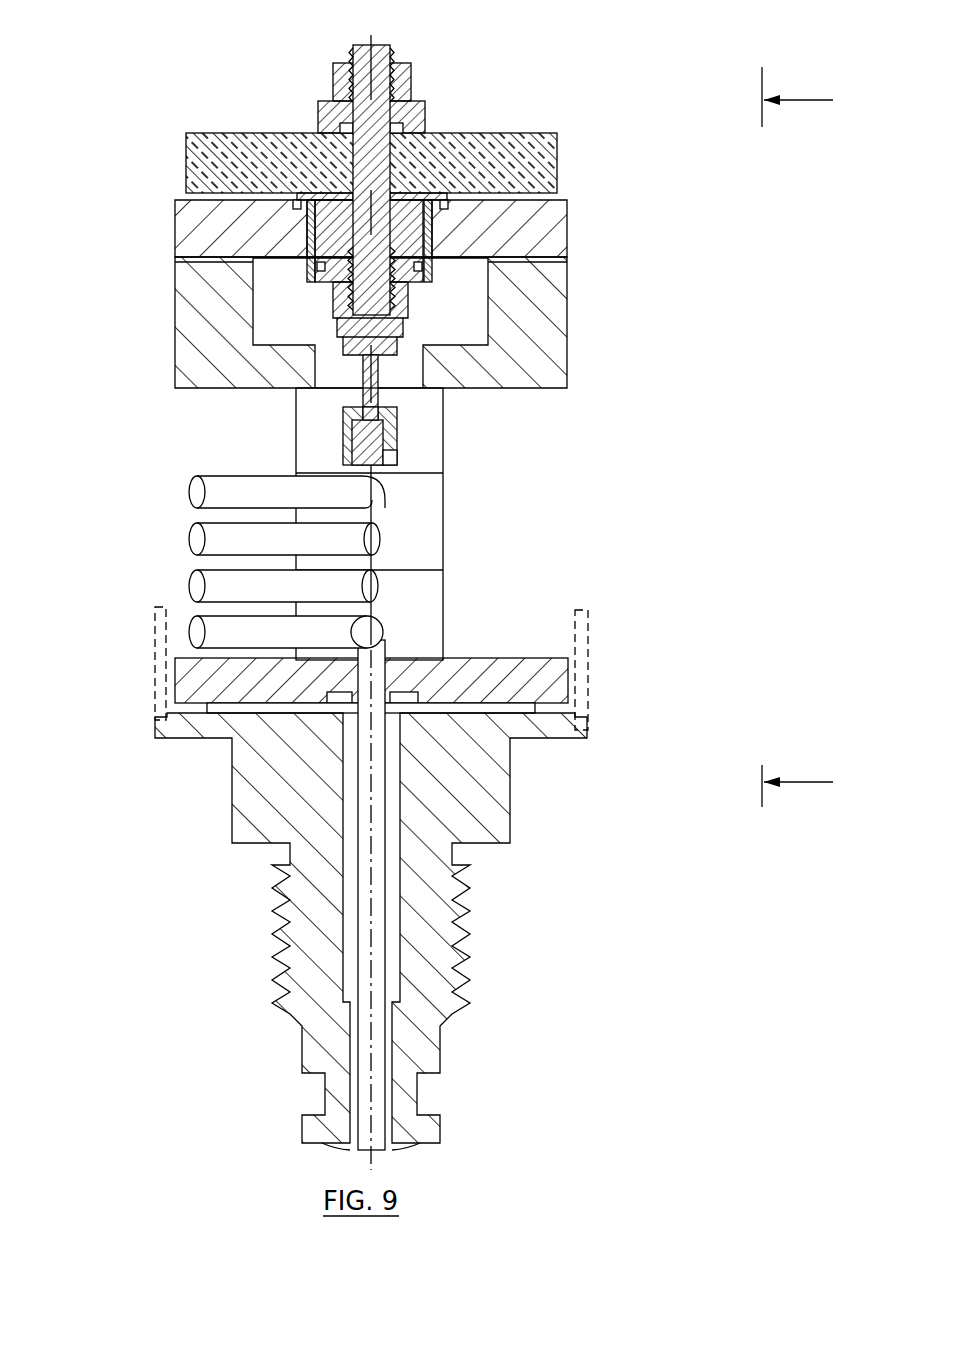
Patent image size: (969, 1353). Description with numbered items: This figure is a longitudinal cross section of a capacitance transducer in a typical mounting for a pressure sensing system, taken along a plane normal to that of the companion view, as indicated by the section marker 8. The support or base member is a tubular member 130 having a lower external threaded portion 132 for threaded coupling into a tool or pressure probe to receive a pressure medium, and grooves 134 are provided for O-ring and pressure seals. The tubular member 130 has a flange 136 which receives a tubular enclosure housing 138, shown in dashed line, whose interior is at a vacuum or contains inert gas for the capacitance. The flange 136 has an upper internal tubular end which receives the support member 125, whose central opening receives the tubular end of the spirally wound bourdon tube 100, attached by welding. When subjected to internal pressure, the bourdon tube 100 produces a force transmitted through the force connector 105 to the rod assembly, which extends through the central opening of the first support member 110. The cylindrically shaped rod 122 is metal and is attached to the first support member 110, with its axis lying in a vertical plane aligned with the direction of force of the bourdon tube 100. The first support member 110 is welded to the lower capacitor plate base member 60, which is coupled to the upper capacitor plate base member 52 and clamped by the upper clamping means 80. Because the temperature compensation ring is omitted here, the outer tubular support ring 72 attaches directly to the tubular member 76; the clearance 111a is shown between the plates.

The upper capacitor plate base member 52 is at (558, 165).
The lower capacitor plate base member 60 is at (568, 233).
The first support member 110 is at (567, 362).
The gap / clearance 111a is at (703, 237).
The upper clamping means 80 is at (413, 94).
The outer tubular support ring 72 is at (430, 277).
The tubular member 76 is at (418, 290).
The cylindrically shaped rod 122 is at (443, 535).
The force connector 105 is at (397, 416).
The support member 125 is at (175, 682).
The flange 136 is at (592, 743).
The tubular member 130 is at (514, 833).
The lower external threaded portion 132 is at (470, 953).
The grooves 134 is at (424, 1088).
The tubular enclosure housing 138 is at (590, 640).
The spirally wound bourdon tube 100 is at (194, 541).
The section line 8- 8 is at (811, 437).